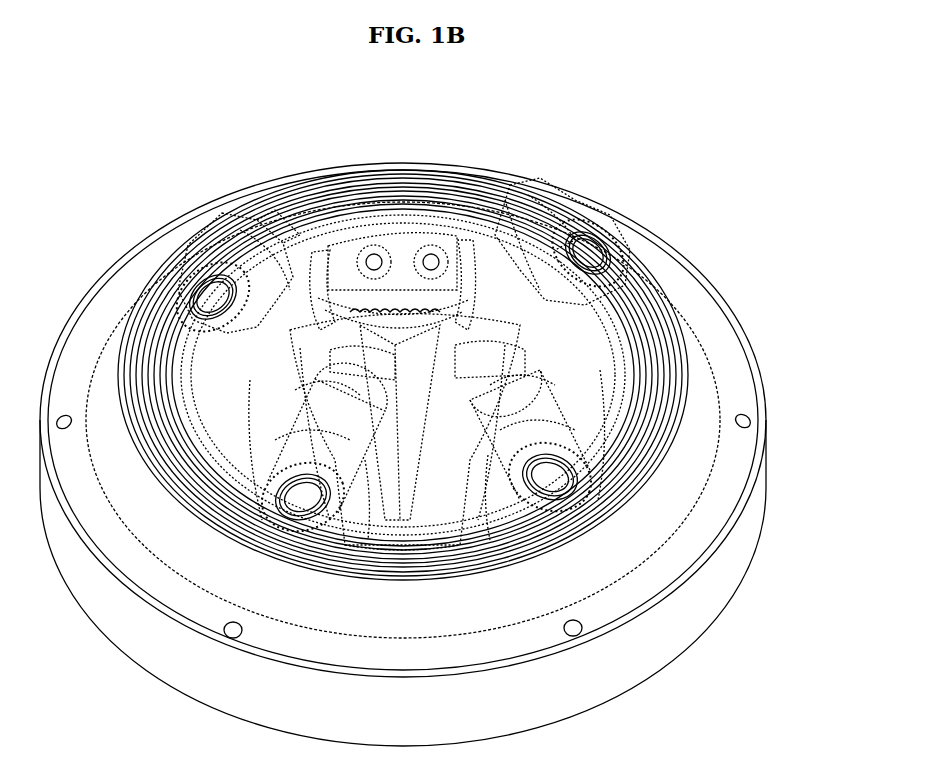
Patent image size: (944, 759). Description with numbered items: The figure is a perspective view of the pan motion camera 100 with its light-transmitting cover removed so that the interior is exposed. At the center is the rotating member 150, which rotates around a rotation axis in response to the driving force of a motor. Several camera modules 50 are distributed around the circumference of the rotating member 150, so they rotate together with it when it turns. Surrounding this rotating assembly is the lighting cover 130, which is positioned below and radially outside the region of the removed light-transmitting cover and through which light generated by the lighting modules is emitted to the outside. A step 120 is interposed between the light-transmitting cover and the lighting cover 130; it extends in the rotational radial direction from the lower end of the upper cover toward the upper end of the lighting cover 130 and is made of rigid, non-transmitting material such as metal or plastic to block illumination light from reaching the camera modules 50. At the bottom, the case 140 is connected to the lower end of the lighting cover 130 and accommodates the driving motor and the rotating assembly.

The pan motion camera 100 is at (440, 89).
The camera module 50 is at (207, 293).
The step 120 is at (660, 323).
The lighting cover 130 is at (700, 373).
The case 140 is at (753, 512).
The rotating member 150 is at (410, 523).